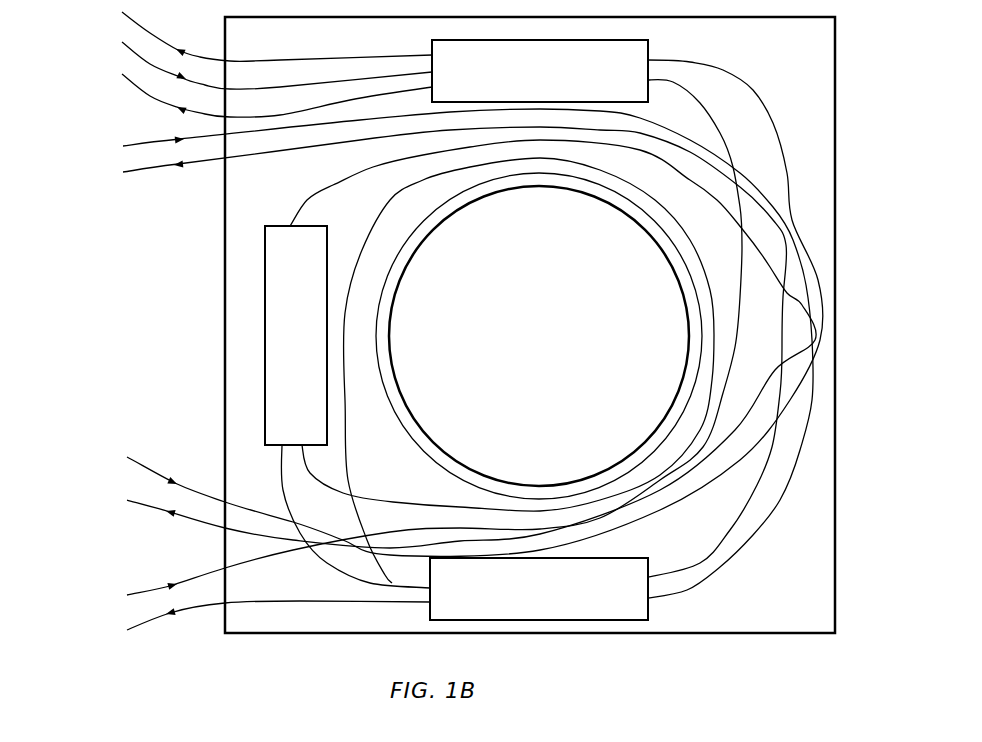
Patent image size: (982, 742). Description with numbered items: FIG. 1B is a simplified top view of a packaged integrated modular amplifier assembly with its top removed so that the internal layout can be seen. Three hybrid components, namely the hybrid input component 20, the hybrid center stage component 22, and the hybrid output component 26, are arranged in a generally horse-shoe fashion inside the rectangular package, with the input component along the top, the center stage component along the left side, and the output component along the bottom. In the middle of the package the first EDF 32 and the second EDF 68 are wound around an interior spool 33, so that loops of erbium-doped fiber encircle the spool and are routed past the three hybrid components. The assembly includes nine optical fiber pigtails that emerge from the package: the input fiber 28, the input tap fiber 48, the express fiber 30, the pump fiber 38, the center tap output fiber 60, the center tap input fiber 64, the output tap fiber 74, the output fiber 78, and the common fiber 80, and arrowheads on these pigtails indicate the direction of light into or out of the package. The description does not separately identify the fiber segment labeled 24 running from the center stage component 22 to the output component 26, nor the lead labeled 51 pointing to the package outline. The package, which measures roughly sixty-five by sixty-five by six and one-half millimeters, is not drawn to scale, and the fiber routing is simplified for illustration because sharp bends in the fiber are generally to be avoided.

The hybrid input component 20 is at (649, 48).
The hybrid center stage component 22 is at (272, 226).
The transmission line from center stage to output component 24 is at (282, 490).
The hybrid output component 26 is at (648, 565).
The input fiber 28 is at (125, 15).
The express fiber 30 is at (125, 79).
The first EDF 32 is at (726, 140).
The interior spool 33 is at (530, 346).
The pump fiber 38 is at (122, 458).
The input tap fiber 48 is at (125, 47).
The hybrid coupler assembly 51 is at (223, 316).
The center tap output fiber 60 is at (122, 499).
The center tap input fiber 64 is at (127, 595).
The second EDF 68 is at (386, 580).
The output tap fiber 74 is at (127, 630).
The output fiber 78 is at (124, 173).
The common fiber 80 is at (124, 146).